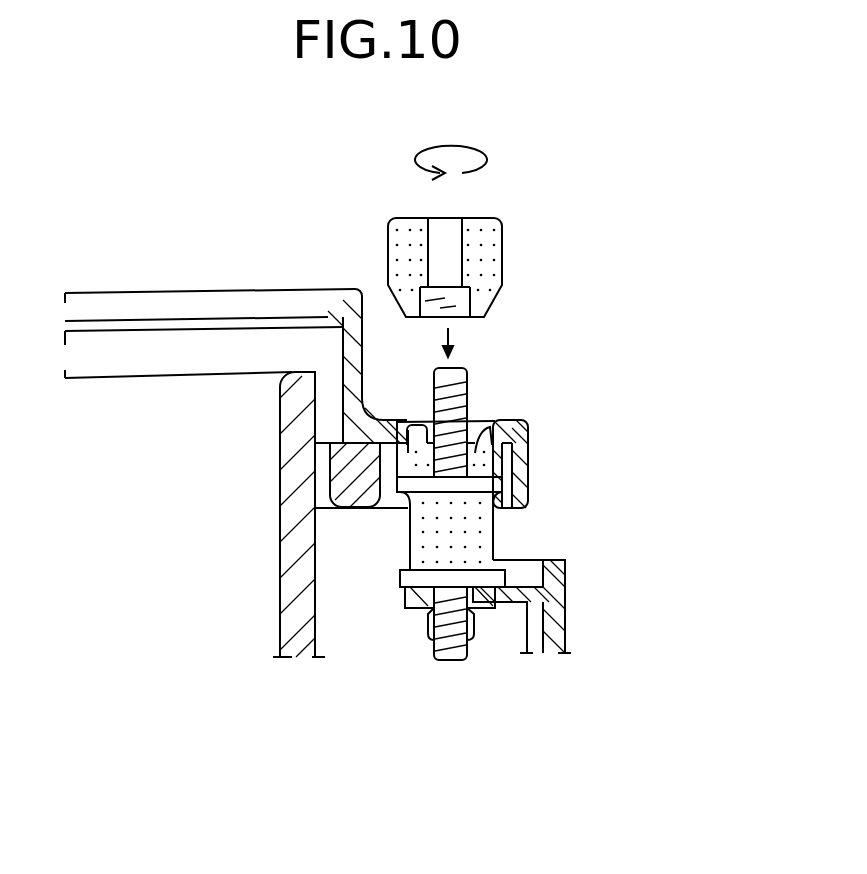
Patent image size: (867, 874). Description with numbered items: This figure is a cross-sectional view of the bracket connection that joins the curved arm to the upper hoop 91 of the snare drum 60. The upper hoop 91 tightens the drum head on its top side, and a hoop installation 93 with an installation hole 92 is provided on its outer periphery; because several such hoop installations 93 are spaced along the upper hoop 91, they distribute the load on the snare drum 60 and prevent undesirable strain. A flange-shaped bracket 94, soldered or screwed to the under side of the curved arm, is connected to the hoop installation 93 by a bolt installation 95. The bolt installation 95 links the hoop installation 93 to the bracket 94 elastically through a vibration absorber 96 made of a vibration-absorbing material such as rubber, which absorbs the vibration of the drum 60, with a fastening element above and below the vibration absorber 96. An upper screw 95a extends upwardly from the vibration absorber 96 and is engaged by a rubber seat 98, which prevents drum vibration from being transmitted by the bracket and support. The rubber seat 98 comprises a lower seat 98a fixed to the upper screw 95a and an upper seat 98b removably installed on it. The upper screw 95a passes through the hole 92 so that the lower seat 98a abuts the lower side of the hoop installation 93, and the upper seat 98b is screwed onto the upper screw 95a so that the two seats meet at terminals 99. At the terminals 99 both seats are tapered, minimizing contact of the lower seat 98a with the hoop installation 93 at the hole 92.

The snare drum 60 is at (283, 585).
The upper hoop 91 is at (118, 292).
The installation hole 92 is at (488, 443).
The hoop installation 93 is at (528, 470).
The flange-shaped bracket 94 is at (404, 600).
The bolt installation 95 is at (495, 542).
The upper screw 95a is at (467, 383).
The vibration absorber 96 is at (425, 530).
The rubber seat 98 is at (507, 278).
The lower seat 98a is at (485, 445).
The upper seat 98b is at (507, 230).
The terminal 99 is at (403, 313).